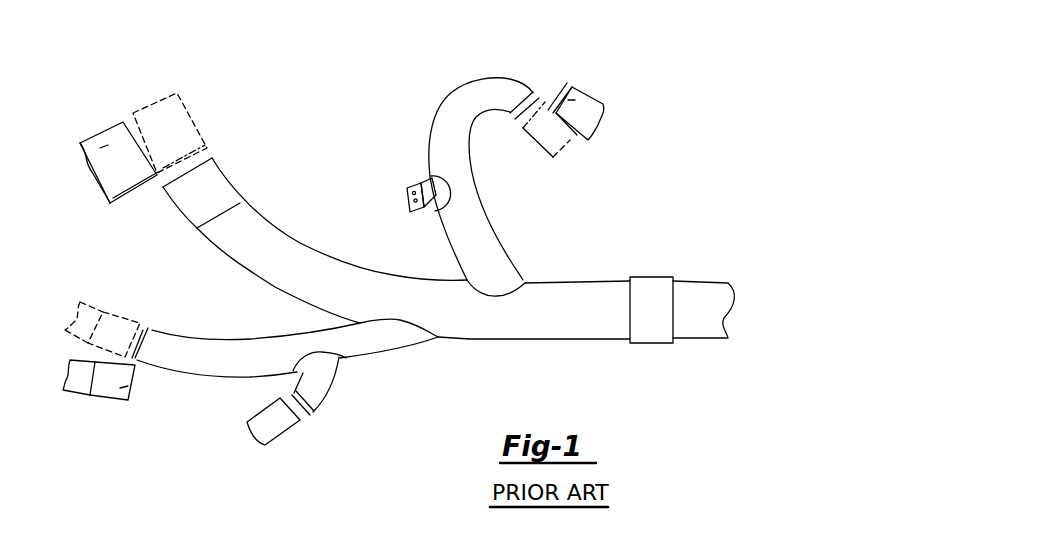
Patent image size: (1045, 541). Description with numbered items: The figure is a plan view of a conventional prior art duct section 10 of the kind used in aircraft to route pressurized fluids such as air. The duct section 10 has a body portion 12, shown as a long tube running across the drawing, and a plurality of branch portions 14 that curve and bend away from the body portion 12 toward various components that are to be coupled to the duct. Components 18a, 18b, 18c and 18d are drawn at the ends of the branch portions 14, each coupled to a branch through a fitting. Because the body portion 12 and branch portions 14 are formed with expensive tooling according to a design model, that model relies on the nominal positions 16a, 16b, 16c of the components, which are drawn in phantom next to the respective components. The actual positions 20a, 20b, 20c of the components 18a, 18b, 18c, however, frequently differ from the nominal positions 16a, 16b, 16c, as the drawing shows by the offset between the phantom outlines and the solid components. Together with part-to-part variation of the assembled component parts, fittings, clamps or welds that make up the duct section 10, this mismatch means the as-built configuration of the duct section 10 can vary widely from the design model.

The duct section 10 is at (616, 243).
The body portion 12 is at (532, 330).
The branch portion 14 is at (422, 138).
The nominal position 16a is at (569, 140).
The nominal position 16b is at (117, 323).
The nominal position 16c is at (180, 132).
The component 18a is at (596, 108).
The component 18b is at (110, 404).
The component 18c is at (96, 176).
The component 18d is at (273, 427).
The actual position 20a is at (571, 100).
The actual position 20b is at (123, 392).
The actual position 20c is at (103, 150).